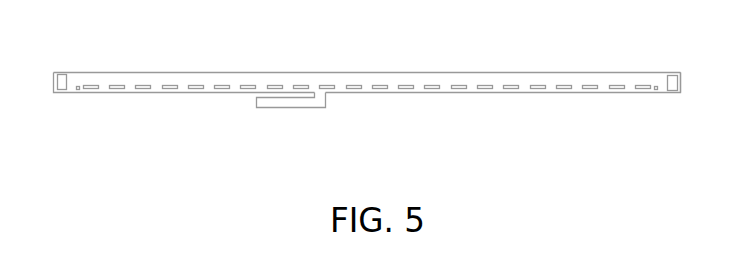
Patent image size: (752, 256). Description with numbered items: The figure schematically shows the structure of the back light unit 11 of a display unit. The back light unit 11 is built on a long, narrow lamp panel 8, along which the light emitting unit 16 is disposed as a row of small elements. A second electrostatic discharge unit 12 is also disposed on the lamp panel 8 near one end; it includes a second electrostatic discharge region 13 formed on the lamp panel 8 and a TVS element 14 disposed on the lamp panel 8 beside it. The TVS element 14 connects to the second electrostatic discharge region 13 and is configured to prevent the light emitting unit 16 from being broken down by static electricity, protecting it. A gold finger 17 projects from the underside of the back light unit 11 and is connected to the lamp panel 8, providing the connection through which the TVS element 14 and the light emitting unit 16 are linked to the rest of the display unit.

The lamp panel 8 is at (417, 92).
The back light unit 11 is at (193, 72).
The second electrostatic discharge unit 12 is at (672, 92).
The second electrostatic discharge region 13 is at (670, 75).
The TVS element 14 is at (656, 86).
The light emitting unit 16 is at (353, 86).
The gold finger 17 is at (279, 108).